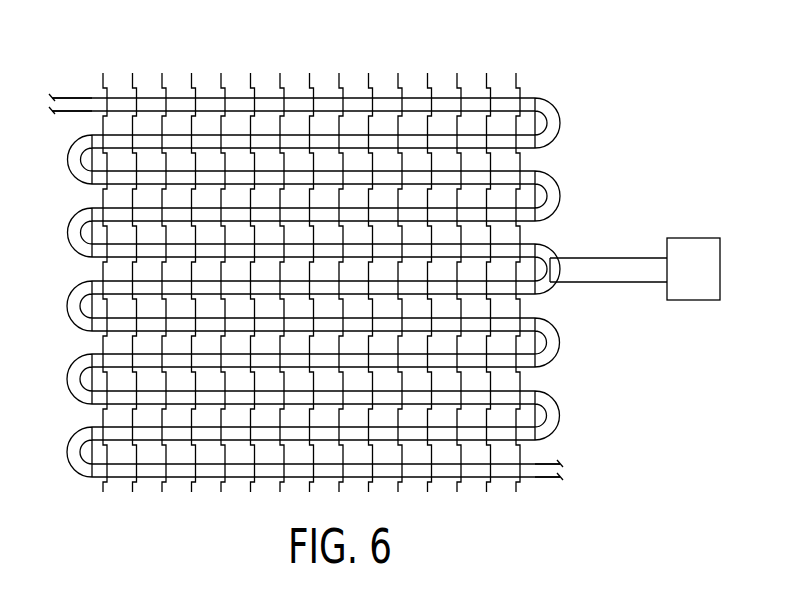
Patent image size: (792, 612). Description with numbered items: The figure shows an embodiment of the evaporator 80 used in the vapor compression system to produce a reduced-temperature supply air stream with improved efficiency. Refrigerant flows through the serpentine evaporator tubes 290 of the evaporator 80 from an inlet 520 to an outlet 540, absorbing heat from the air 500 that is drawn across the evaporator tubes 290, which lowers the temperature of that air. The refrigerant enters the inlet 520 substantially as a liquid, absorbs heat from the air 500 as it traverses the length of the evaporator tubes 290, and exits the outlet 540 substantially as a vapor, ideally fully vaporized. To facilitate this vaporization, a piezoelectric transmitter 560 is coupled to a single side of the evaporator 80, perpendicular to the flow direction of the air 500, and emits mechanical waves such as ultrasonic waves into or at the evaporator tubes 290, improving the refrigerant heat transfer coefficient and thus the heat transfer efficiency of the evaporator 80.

The evaporator 80 is at (346, 283).
The evaporator tubes 290 is at (560, 122).
The air 500 is at (343, 83).
The outlet 540 is at (52, 105).
The inlet 520 is at (555, 470).
The piezoelectric transmitter 560 is at (695, 238).